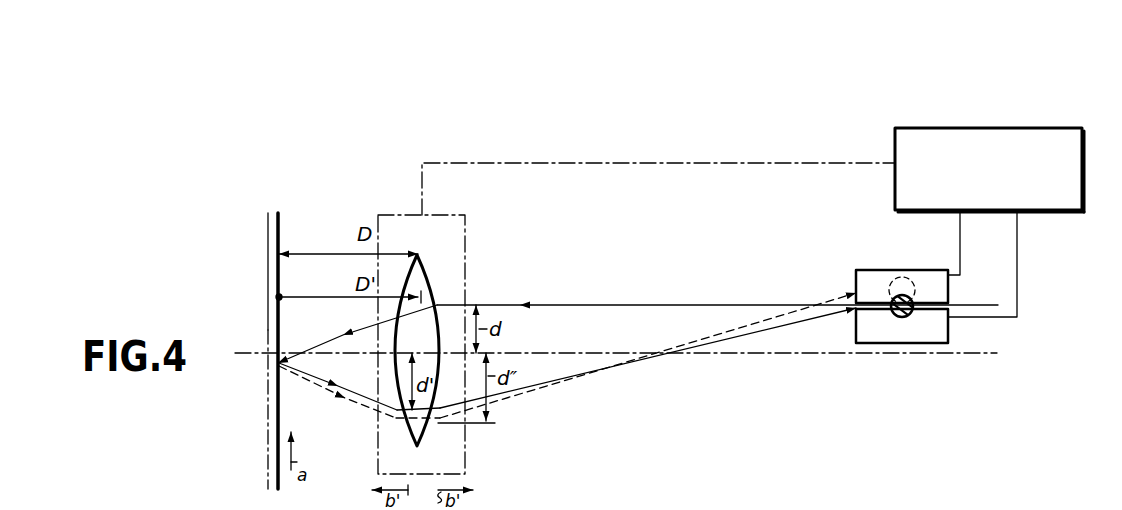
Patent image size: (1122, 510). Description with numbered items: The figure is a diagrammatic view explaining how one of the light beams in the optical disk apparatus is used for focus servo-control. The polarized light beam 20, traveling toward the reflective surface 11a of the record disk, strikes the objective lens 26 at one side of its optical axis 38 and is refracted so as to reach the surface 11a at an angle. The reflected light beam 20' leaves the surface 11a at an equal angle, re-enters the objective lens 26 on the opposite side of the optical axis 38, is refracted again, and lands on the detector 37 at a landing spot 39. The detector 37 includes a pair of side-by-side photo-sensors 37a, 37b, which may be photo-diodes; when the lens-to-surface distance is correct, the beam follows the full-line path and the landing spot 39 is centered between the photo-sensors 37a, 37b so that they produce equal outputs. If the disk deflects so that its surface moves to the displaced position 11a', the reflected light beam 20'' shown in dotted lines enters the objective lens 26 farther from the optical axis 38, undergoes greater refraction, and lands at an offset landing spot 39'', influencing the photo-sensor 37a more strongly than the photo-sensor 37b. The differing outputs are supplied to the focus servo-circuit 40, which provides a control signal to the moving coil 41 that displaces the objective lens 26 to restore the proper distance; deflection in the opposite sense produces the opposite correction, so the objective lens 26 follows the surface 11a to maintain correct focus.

The reflective surface of record disk 11a is at (310, 351).
The displaced position of reflective surface 11a' is at (308, 351).
The polarized light beam 20 is at (638, 310).
The reflected light beam 20' is at (567, 377).
The reflected light beam at displaced surface 20'' is at (567, 348).
The objective lens 26 is at (427, 283).
The detector 37 is at (904, 281).
The photo-sensor 37a is at (937, 288).
The photo-sensor 37b is at (933, 329).
The optical axis 38 is at (792, 357).
The landing spot 39 is at (880, 277).
The offset landing spot 39'' is at (917, 265).
The focus servo-circuit 40 is at (913, 128).
The moving coil 41 is at (452, 215).